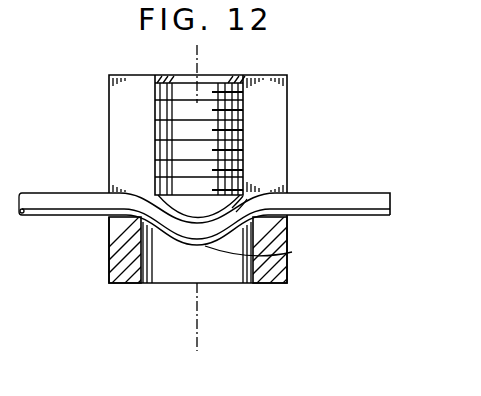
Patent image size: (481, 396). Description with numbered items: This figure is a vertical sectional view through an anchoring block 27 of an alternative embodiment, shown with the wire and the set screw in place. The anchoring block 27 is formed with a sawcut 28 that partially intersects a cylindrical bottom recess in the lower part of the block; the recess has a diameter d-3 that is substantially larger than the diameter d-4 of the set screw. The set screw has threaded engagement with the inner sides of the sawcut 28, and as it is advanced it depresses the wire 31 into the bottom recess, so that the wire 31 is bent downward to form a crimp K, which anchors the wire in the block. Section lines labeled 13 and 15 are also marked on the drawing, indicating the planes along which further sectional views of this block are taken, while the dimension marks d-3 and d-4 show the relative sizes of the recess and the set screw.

The anchoring block 27 is at (288, 102).
The sawcut 28 is at (283, 138).
The wire 31 is at (327, 197).
The crimp K is at (258, 253).
The section line 13- 13 is at (195, 48).
The section line 15- 15 is at (342, 359).
The diameter of set screw d-4 is at (243, 63).
The diameter of bottom recess d-3 is at (252, 326).